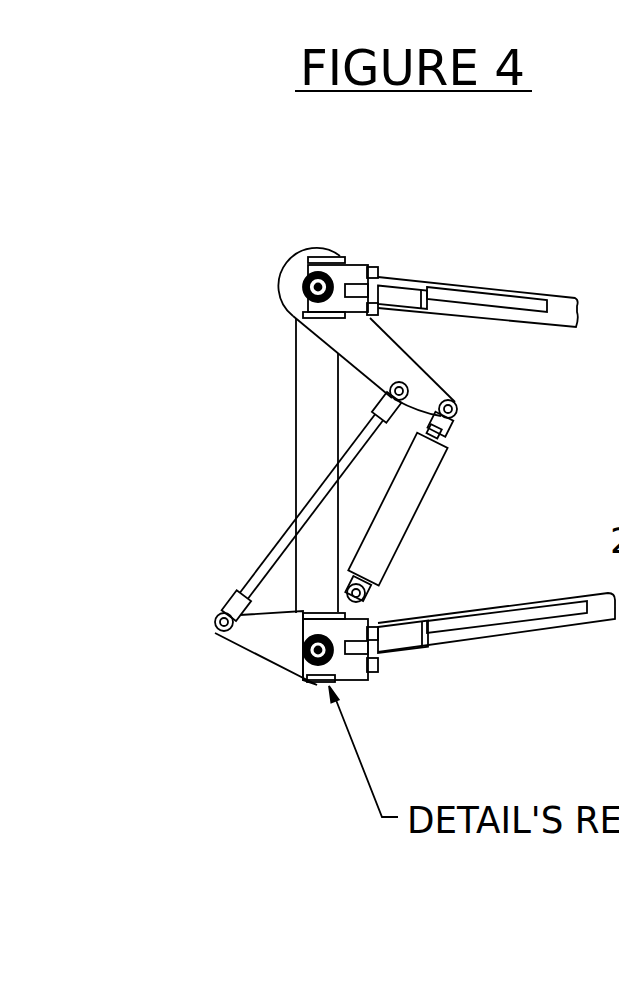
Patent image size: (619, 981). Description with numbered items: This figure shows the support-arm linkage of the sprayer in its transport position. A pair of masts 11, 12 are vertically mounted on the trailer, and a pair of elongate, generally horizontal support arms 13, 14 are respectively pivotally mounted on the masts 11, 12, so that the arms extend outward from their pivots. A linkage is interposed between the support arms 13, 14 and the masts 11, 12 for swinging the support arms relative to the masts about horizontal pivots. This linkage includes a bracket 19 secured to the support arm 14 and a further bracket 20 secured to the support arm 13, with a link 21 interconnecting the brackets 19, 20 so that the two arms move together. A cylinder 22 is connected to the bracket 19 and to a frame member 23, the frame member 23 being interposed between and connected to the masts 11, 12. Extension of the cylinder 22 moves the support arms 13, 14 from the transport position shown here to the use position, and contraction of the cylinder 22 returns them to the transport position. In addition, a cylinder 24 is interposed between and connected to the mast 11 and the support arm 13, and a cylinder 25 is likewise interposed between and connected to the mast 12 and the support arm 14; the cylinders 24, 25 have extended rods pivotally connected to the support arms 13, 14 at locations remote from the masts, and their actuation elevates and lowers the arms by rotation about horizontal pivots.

The mast 11 is at (315, 682).
The mast 12 is at (332, 260).
The support arm 13 is at (602, 605).
The support arm 14 is at (562, 312).
The bracket 19 is at (386, 365).
The bracket 20 is at (273, 639).
The link 21 is at (312, 508).
The cylinder 22 is at (399, 507).
The frame member 23 is at (317, 384).
The cylinder 24 is at (398, 638).
The cylinder 25 is at (410, 295).